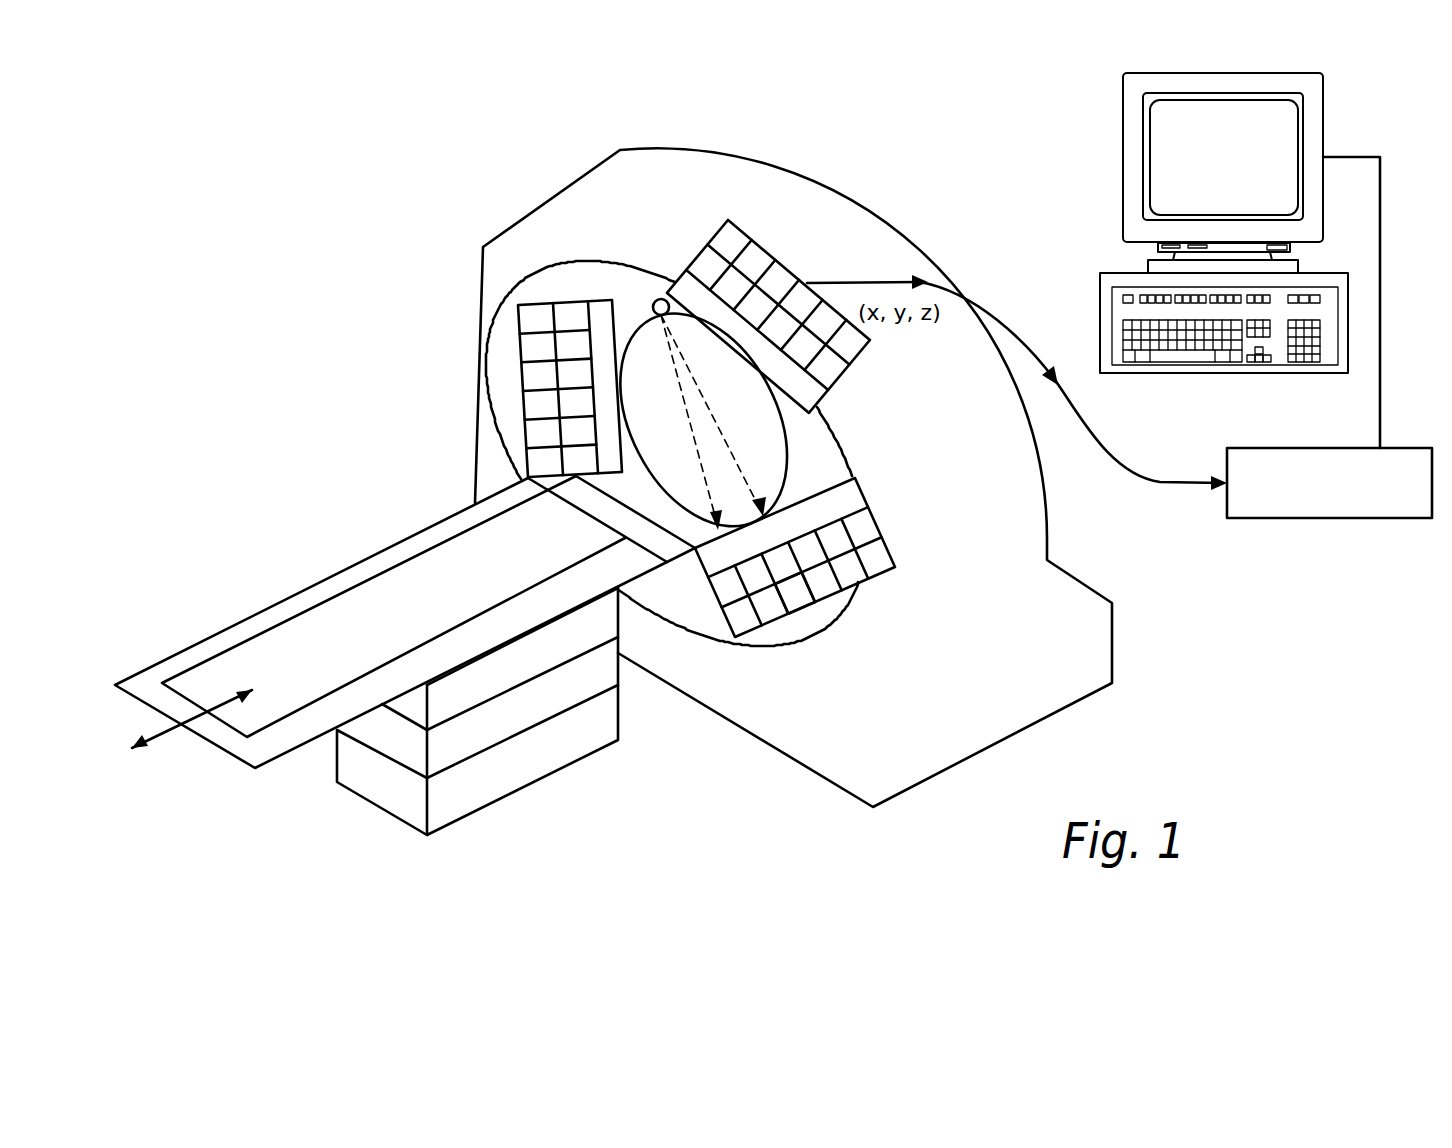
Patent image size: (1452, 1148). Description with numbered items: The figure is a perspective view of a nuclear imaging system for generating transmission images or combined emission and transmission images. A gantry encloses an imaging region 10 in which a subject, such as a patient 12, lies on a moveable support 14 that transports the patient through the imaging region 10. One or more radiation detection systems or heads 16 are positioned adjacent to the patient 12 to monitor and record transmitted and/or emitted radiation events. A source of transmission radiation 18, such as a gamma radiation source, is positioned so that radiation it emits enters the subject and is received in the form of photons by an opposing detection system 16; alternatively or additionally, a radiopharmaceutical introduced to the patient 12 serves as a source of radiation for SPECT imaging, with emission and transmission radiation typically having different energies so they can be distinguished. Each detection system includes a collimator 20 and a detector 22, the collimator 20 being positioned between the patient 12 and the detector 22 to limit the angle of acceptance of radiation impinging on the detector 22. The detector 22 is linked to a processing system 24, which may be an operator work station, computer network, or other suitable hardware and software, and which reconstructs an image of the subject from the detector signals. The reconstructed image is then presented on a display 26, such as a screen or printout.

The imaging region 10 is at (503, 400).
The patient 12 is at (762, 449).
The moveable support 14 is at (273, 607).
The radiation detection system 16 is at (914, 558).
The source of transmission radiation 18 is at (655, 298).
The collimator 20 is at (882, 520).
The detector 22 is at (772, 608).
The processing system 24 is at (1340, 520).
The display 26 is at (1122, 157).